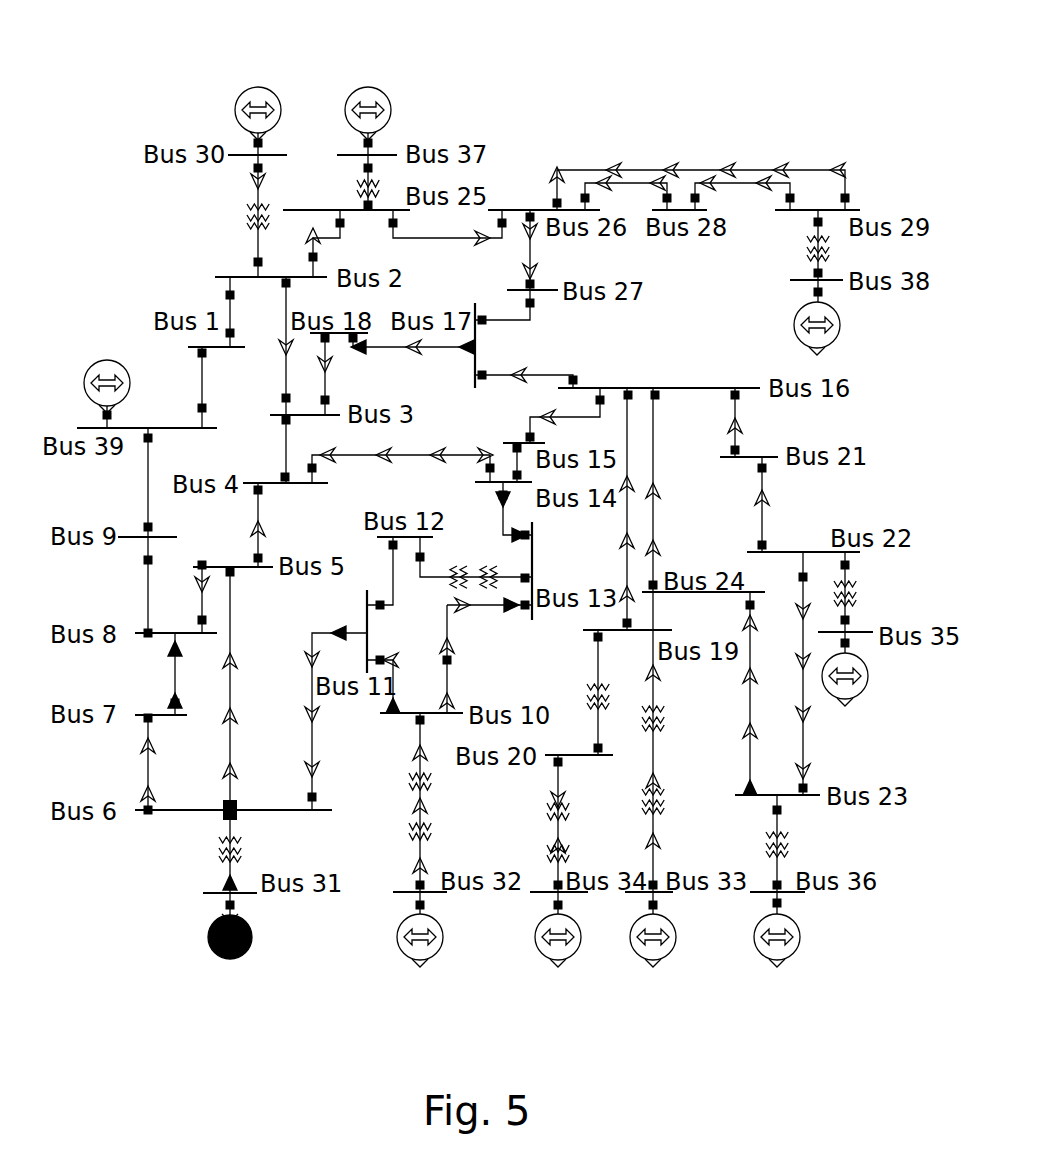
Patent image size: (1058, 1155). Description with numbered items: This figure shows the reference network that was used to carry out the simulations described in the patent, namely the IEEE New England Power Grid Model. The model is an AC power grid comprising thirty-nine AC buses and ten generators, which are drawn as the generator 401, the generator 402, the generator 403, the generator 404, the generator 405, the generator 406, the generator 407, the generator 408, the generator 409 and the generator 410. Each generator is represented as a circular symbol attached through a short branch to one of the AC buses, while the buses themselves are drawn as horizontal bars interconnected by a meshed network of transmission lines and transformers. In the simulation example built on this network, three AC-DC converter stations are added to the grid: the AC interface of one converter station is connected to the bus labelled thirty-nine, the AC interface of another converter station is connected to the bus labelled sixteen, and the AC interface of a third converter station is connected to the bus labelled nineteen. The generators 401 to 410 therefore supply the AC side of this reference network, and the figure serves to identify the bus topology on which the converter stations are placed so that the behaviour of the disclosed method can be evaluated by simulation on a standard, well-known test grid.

The generator 401 is at (107, 360).
The generator 402 is at (230, 960).
The generator 403 is at (420, 962).
The generator 404 is at (653, 962).
The generator 405 is at (558, 962).
The generator 406 is at (868, 676).
The generator 407 is at (777, 962).
The generator 408 is at (364, 87).
The generator 409 is at (840, 322).
The generator 410 is at (237, 101).